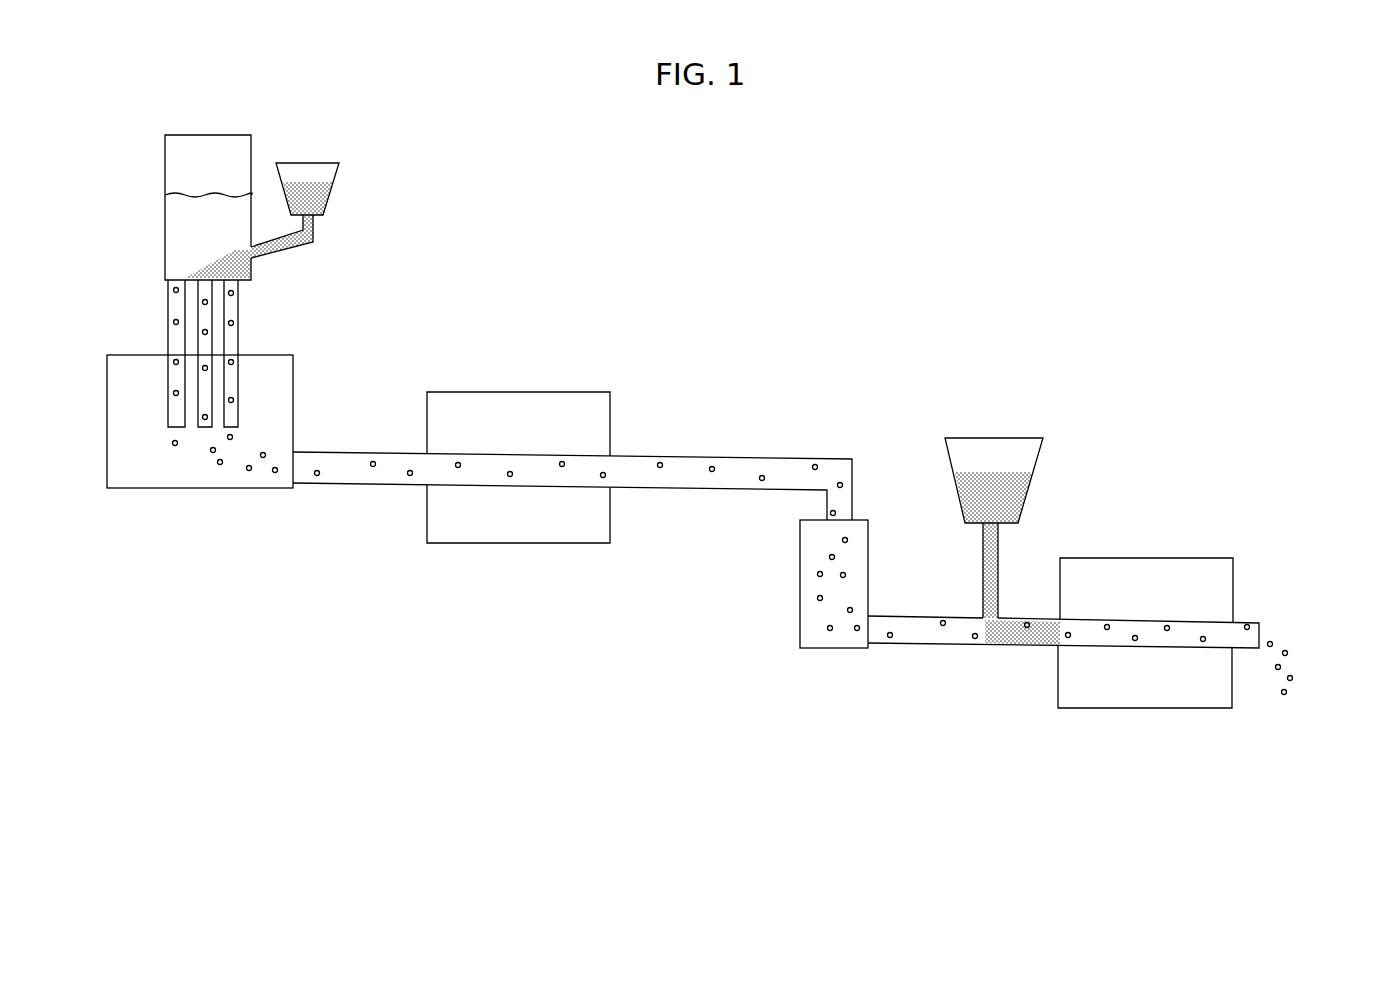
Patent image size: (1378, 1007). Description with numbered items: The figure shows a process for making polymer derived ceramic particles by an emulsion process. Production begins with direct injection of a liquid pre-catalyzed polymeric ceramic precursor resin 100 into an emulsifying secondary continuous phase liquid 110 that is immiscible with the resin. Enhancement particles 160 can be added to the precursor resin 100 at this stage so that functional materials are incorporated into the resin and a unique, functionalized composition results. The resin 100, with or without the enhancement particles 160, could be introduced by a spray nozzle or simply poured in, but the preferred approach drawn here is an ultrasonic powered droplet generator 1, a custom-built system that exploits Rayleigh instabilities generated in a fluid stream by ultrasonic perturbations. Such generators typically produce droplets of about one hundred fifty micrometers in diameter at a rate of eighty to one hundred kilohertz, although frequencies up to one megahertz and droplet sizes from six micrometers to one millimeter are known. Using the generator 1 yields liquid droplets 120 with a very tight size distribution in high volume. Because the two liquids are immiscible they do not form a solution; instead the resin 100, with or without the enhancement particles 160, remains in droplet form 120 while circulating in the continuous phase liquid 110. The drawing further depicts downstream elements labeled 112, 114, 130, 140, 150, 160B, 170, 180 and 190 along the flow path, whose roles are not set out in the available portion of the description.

The ultrasonic powered droplet generator 1 is at (154, 351).
The liquid pre-catalyzed polymeric ceramic precursor resin 100 is at (247, 178).
The emulsifying secondary continuous phase liquid 110 is at (200, 469).
The first conduit section 112 is at (845, 443).
The second conduit section 114 is at (991, 684).
The liquid droplets 120 is at (572, 424).
The heating device 130 is at (569, 429).
The particles 140 is at (515, 529).
The mixing chamber 150 is at (744, 598).
The enhancement particles 160 is at (333, 196).
The second feed hopper 160B is at (1039, 503).
The additive material 170 is at (1055, 713).
The second heating device 180 is at (1166, 594).
The product particles 190 is at (1301, 689).